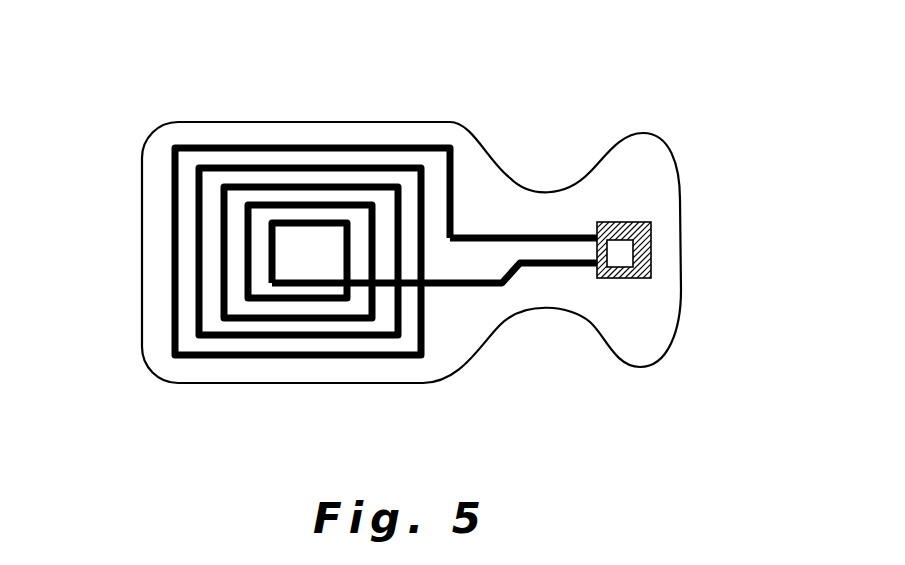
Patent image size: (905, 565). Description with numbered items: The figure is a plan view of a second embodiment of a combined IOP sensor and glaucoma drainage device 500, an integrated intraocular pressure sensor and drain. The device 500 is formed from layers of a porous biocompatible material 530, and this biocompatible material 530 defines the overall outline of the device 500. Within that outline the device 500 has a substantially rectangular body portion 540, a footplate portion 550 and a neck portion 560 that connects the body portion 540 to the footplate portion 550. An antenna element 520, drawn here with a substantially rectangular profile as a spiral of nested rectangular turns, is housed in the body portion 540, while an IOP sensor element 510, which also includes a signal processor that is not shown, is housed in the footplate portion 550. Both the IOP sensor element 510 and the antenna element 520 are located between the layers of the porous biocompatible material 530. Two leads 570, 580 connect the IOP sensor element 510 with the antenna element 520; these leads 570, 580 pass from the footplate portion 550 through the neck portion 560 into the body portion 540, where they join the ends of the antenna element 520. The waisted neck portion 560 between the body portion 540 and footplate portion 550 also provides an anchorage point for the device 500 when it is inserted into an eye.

The combined IOP sensor and glaucoma drainage device 500 is at (592, 94).
The IOP sensor element 510 is at (650, 223).
The antenna element 520 is at (383, 358).
The porous biocompatible material 530 is at (202, 120).
The body portion 540 is at (352, 112).
The footplate portion 550 is at (670, 373).
The neck portion 560 is at (560, 321).
The lead 570 is at (478, 232).
The lead 580 is at (460, 287).